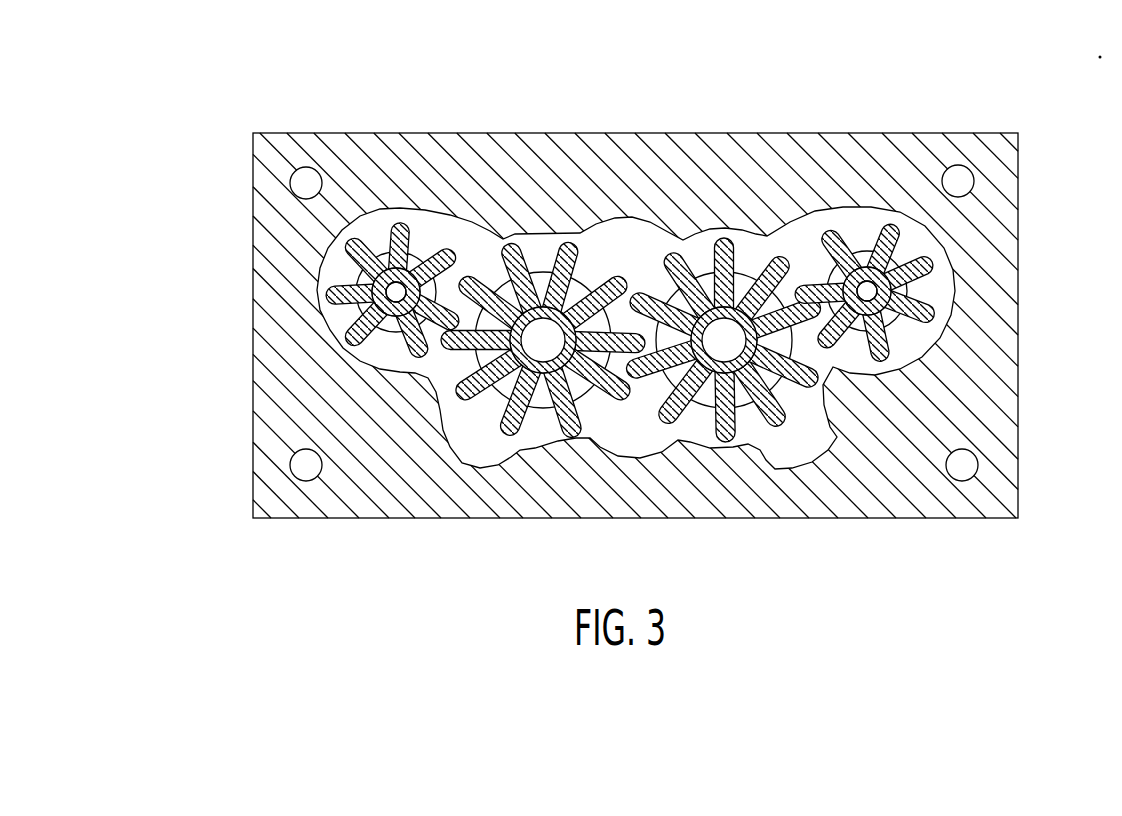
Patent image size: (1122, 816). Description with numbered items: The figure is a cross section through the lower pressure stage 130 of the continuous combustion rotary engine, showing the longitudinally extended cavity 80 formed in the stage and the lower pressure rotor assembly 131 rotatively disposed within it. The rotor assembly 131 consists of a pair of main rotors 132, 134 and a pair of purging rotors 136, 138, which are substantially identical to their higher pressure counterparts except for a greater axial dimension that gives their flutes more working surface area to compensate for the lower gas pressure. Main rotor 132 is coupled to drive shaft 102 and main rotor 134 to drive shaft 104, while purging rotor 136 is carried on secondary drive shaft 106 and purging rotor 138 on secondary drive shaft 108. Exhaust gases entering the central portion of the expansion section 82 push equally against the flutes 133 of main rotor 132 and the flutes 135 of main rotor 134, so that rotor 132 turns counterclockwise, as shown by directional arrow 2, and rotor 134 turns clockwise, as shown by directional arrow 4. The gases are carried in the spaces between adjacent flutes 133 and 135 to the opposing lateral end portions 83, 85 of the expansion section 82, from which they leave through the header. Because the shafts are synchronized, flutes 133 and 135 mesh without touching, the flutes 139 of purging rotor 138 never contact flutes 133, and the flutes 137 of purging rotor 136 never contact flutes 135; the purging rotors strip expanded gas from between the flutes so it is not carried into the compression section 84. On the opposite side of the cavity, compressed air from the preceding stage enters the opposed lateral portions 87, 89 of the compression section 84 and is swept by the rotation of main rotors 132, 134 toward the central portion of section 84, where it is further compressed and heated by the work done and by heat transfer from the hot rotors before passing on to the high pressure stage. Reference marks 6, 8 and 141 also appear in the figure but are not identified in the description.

The directional arrow 2 is at (535, 402).
The directional arrow 4 is at (730, 261).
The right idler gear 6 is at (937, 265).
The left idler gear 8 is at (312, 218).
The cavity 80 is at (601, 260).
The expansion section 82 is at (642, 232).
The lateral end portion of expansion section 83 is at (435, 222).
The compression section 84 is at (640, 447).
The lateral end portion of expansion section 85 is at (810, 217).
The lateral portion of compression section 87 is at (448, 430).
The lateral portion of compression section 89 is at (793, 450).
The drive shaft 102 is at (512, 405).
The drive shaft 104 is at (777, 382).
The secondary drive shaft 106 is at (900, 300).
The secondary drive shaft 108 is at (378, 282).
The lower pressure stage 130 is at (918, 131).
The lower pressure rotor assembly 131 is at (485, 433).
The main rotor 132 is at (521, 402).
The flutes 133 is at (557, 430).
The main rotor 134 is at (745, 290).
The flutes 135 is at (775, 465).
The purging rotor 136 is at (893, 289).
The flutes 137 is at (897, 358).
The purging rotor 138 is at (377, 247).
The flutes 139 is at (352, 345).
The plate face 141 is at (995, 380).